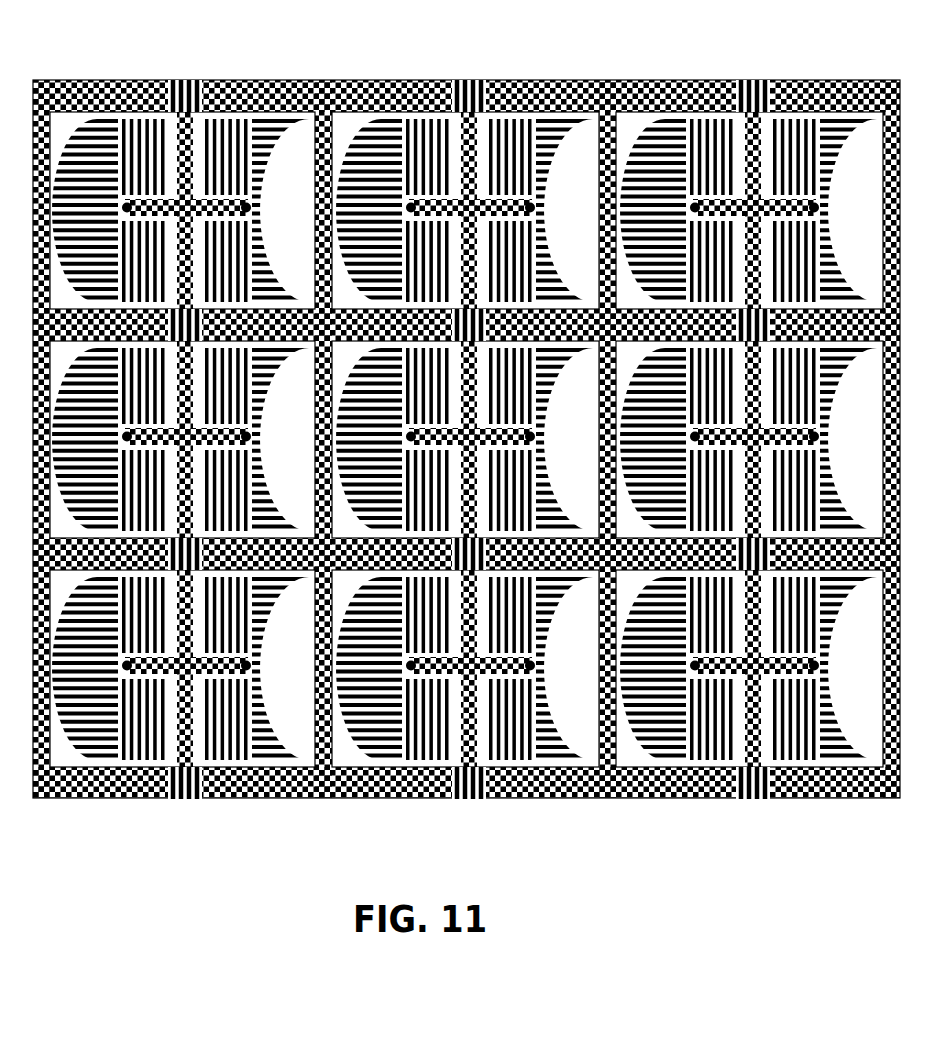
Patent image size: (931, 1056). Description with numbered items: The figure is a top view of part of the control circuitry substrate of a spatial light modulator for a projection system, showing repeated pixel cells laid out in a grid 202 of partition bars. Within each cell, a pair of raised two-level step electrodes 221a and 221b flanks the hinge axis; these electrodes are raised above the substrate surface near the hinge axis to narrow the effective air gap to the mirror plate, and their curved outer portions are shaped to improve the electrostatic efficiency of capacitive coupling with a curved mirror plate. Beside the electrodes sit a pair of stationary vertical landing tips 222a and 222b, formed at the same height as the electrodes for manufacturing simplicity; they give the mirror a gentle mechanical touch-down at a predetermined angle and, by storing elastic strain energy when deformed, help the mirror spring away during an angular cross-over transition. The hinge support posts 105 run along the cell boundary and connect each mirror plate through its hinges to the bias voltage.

The second level electrode 221a is at (135, 140).
The second level electrode 221b is at (222, 147).
The stationary vertical landing tip 222a is at (400, 181).
The stationary vertical landing tip 222b is at (529, 180).
The partition wall grid 202 is at (640, 88).
The hinge support post 105 is at (767, 87).